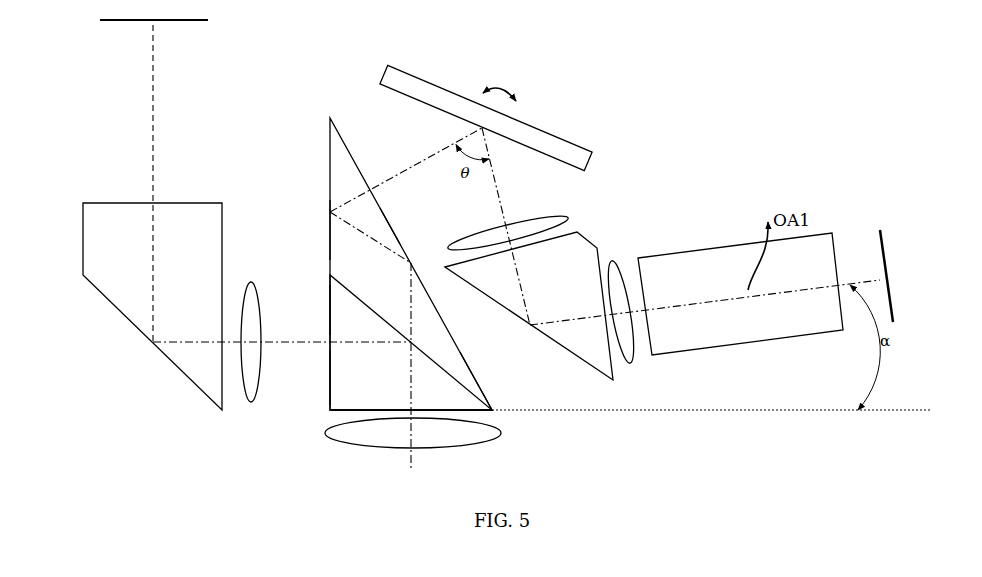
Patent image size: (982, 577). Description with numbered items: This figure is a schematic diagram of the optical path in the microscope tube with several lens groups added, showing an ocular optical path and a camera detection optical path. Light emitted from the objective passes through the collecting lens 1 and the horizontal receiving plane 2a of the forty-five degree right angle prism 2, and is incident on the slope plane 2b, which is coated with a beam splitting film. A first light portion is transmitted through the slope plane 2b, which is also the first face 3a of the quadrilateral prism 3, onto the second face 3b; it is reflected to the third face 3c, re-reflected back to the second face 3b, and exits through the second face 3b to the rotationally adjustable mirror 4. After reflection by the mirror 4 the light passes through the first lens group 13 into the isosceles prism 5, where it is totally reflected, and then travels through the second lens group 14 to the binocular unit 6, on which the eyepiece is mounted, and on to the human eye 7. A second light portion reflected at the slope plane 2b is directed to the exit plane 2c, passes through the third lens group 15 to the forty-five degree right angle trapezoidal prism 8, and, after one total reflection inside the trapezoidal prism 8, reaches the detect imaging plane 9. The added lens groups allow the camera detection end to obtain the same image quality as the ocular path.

The collecting lens 1 is at (326, 433).
The 45 degree right angle prism 2 is at (330, 297).
The horizontal receiving plane 2a is at (332, 412).
The slope plane 2b is at (333, 306).
The exit plane 2c is at (330, 365).
The quadrilateral prism 3 is at (340, 170).
The first face 3a is at (458, 383).
The second face 3b is at (392, 225).
The third face 3c is at (330, 228).
The rotationally adjustable mirror 4 is at (382, 80).
The isosceles prism 5 is at (590, 370).
The binocular unit 6 is at (783, 338).
The human eye 7 is at (893, 318).
The 45 degree right angle trapezoidal prism 8 is at (98, 230).
The detect imaging plane 9 is at (100, 22).
The first lens group 13 is at (568, 218).
The second lens group 14 is at (613, 262).
The third lens group 15 is at (251, 282).